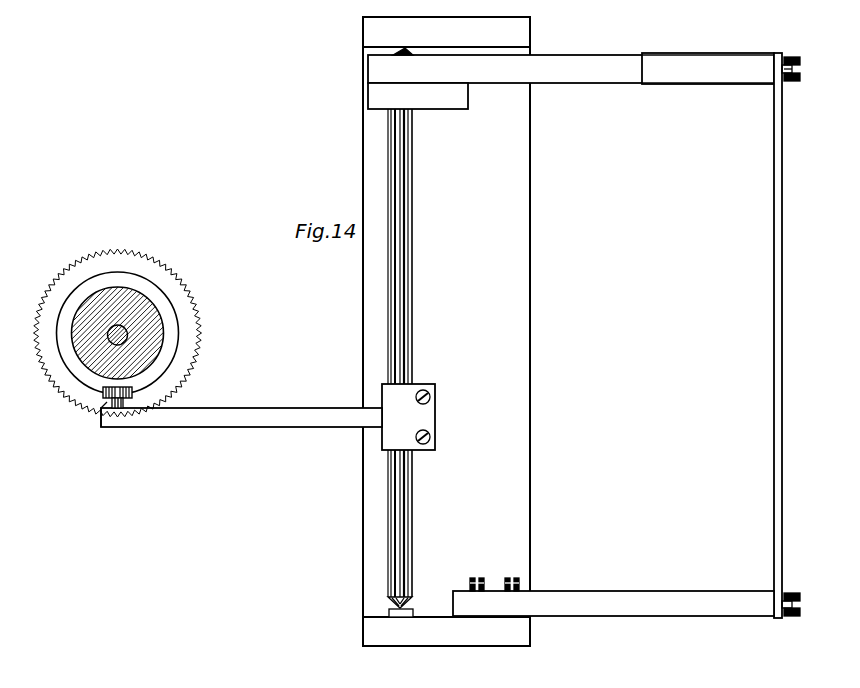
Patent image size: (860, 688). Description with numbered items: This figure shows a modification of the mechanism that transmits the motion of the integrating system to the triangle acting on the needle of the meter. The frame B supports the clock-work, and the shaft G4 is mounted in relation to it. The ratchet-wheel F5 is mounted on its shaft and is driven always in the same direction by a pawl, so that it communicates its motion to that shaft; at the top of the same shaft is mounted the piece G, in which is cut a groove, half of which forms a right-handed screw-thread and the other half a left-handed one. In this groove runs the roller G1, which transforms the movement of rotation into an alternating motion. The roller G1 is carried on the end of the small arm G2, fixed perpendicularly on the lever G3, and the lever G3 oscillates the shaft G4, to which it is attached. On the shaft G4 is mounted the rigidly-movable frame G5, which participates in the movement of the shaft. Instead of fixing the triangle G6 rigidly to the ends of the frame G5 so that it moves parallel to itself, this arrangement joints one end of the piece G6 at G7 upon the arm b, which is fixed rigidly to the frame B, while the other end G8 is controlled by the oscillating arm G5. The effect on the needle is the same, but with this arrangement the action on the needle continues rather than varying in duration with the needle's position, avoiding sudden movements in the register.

The frame B is at (446, 331).
The arm b is at (633, 598).
The ratchet-wheel F5 is at (124, 333).
The piece G is at (124, 333).
The roller G1 is at (131, 392).
The small arm G2 is at (102, 414).
The lever G3 is at (252, 414).
The shaft G4 is at (406, 245).
The frame G5 is at (583, 63).
The triangle G6 is at (777, 283).
The joint G7 is at (775, 618).
The end of piece G6 G8 is at (779, 55).